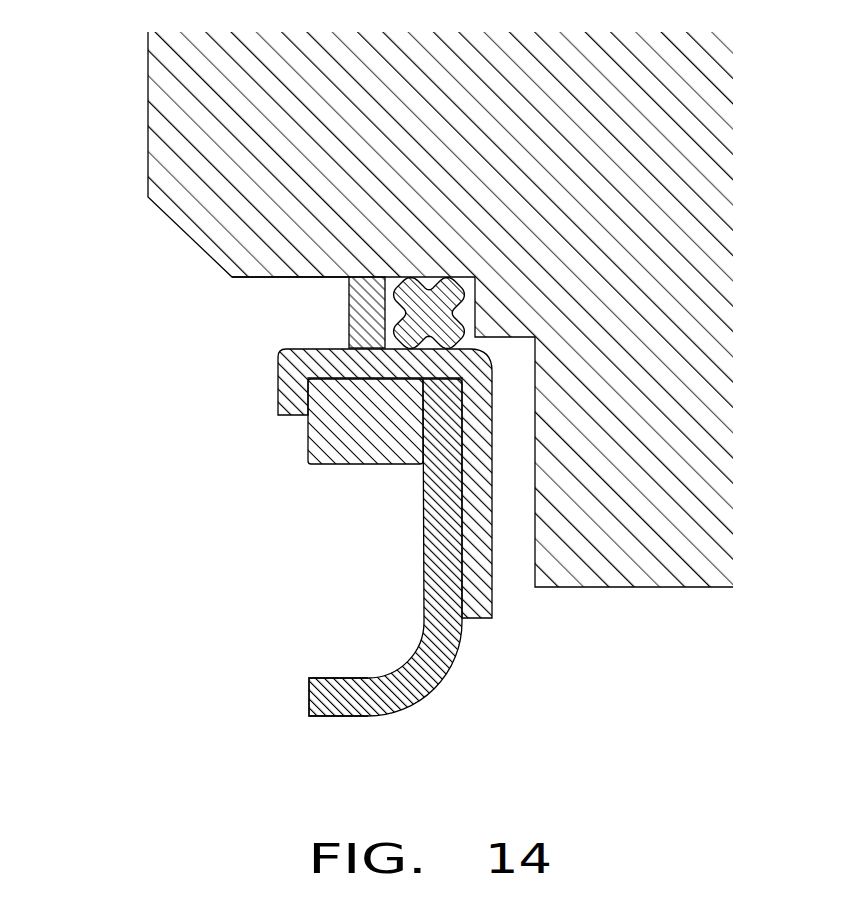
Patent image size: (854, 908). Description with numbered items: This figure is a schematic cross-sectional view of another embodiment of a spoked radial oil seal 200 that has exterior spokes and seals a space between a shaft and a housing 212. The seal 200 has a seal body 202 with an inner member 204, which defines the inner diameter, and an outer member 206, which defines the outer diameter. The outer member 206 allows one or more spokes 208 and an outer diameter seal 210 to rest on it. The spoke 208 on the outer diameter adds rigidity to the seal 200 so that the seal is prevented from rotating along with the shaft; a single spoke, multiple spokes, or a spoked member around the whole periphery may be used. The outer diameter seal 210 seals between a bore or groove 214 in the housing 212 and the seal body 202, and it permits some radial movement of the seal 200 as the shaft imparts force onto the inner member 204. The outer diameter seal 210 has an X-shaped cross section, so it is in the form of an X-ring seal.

The radial oil seal 200 is at (481, 658).
The seal body 202 is at (299, 447).
The inner member 204 is at (340, 717).
The outer member 206 is at (278, 373).
The spoke 208 is at (361, 268).
The outer diameter seal 210 is at (458, 266).
The housing 212 is at (147, 119).
The groove 214 is at (293, 286).